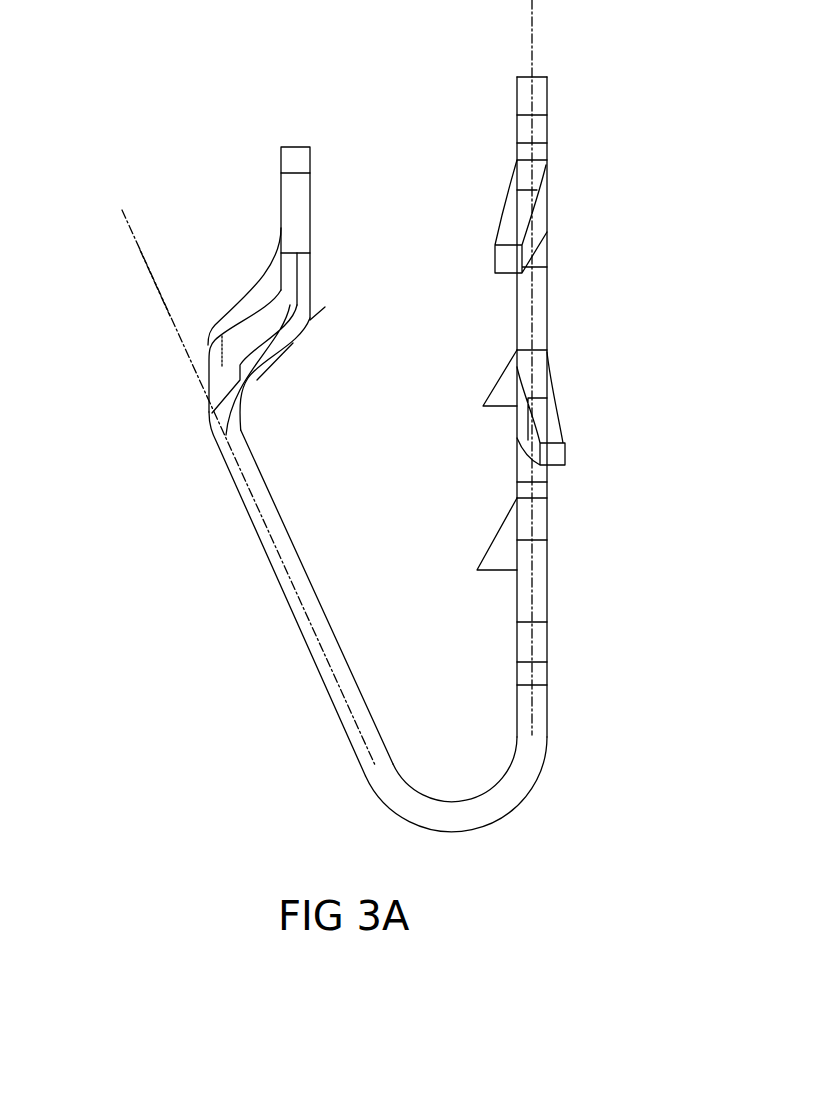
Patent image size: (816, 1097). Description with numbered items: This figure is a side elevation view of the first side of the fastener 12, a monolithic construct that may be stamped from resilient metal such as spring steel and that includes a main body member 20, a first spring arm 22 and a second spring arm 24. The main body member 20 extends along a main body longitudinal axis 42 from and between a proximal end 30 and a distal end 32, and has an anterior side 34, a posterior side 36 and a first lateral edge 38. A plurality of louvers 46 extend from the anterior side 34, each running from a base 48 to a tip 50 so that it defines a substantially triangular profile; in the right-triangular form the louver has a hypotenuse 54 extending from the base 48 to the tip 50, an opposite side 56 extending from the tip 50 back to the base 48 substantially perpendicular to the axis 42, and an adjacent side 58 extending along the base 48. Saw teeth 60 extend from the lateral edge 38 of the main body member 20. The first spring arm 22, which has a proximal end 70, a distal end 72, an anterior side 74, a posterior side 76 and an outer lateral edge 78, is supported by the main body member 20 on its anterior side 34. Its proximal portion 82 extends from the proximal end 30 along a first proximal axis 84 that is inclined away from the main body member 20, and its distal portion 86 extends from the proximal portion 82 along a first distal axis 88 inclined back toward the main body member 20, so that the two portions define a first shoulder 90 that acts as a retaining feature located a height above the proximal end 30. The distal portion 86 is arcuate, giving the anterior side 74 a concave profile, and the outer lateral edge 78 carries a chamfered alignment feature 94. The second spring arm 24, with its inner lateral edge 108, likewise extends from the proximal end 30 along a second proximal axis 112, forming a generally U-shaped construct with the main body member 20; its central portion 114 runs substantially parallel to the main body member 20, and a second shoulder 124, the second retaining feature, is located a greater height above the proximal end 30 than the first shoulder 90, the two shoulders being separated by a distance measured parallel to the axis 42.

The fastener 12 is at (233, 124).
The main body member 20 is at (567, 693).
The first spring arm 22 is at (254, 567).
The second spring arm 24 is at (244, 240).
The proximal end 30 is at (460, 835).
The distal end 32 is at (540, 77).
The anterior side 34 is at (515, 310).
The posterior side 36 is at (557, 300).
The first lateral edge 38 is at (540, 588).
The main body longitudinal axis 42 is at (520, 14).
The louvers 46 is at (497, 550).
The base 48 is at (530, 552).
The tip 50 is at (478, 570).
The hypotenuse 54 is at (512, 500).
The opposite side 56 is at (497, 572).
The adjacent side 58 is at (515, 530).
The saw teeth 60 is at (562, 425).
The proximal end of first spring arm 70 is at (455, 802).
The distal end of first spring arm 72 is at (300, 147).
The anterior side of first spring arm 74 is at (335, 712).
The posterior side of first spring arm 76 is at (405, 790).
The outer lateral edge 78 is at (318, 660).
The proximal portion of first spring arm 82 is at (287, 608).
The first proximal axis 84 is at (152, 300).
The distal portion of first spring arm 86 is at (300, 275).
The first distal axis 88 is at (327, 327).
The first shoulder 90 is at (240, 428).
The alignment feature 94 is at (300, 192).
The inner lateral edge of second spring arm 108 is at (250, 312).
The second proximal axis 112 is at (118, 220).
The central portion of second spring arm 114 is at (222, 333).
The second shoulder 124 is at (208, 333).